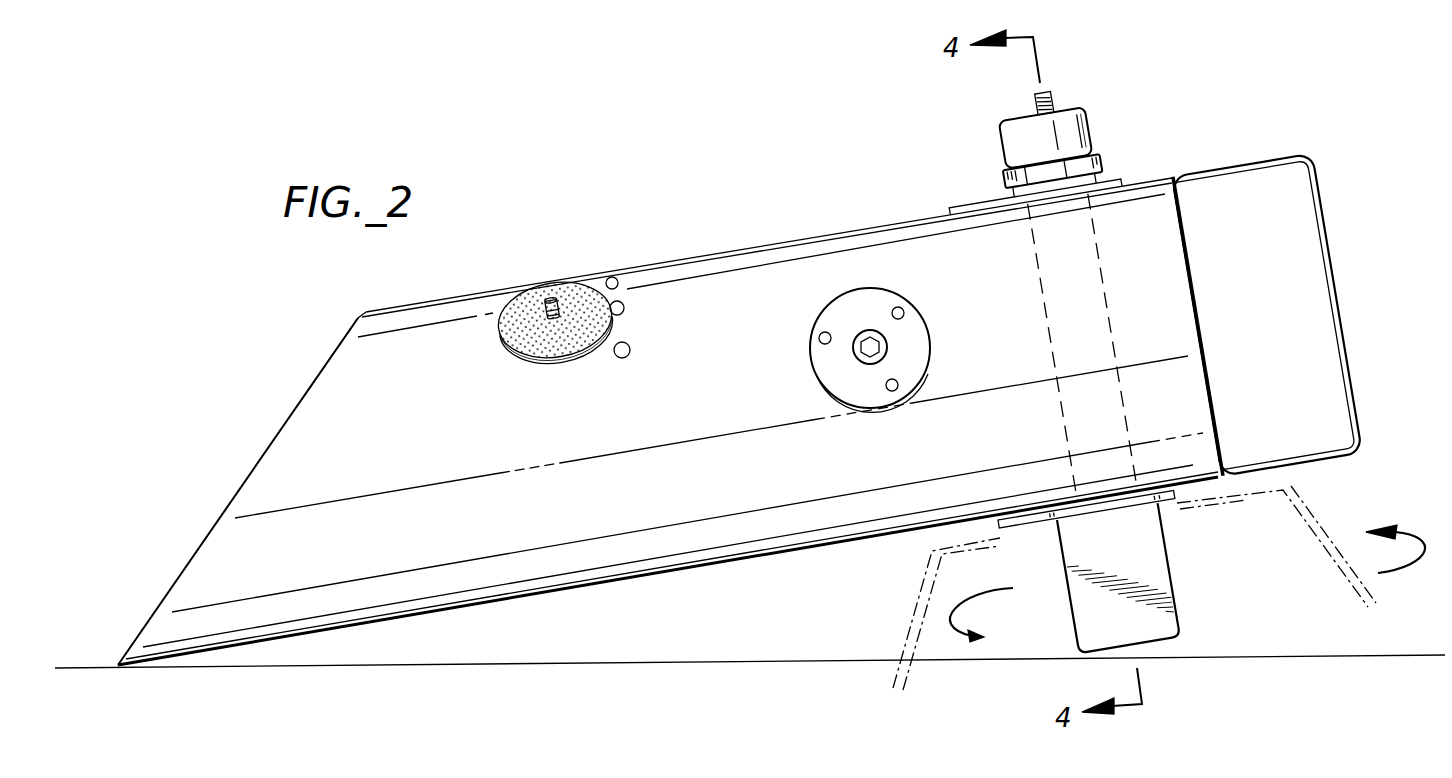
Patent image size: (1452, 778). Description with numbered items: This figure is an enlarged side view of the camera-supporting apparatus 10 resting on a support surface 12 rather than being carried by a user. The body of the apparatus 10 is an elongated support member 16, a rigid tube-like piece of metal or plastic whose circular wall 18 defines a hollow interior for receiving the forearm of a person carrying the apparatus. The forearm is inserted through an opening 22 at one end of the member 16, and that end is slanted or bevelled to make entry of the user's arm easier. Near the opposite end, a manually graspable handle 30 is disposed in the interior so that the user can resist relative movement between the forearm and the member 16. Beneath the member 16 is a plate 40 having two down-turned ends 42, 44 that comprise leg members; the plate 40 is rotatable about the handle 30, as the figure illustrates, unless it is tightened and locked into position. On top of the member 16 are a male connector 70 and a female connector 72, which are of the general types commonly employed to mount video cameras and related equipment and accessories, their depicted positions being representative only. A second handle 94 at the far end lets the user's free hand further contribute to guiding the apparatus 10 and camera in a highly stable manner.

The apparatus 10 is at (734, 254).
The support surface 12 is at (596, 665).
The elongated support member 16 is at (344, 366).
The circular wall 18 is at (680, 277).
The opening 22 is at (273, 440).
The manually graspable handle 30 is at (1093, 230).
The plate 40 is at (1237, 510).
The down-turned end 42 is at (1165, 578).
The down-turned end 44 is at (1313, 510).
The male connector 70 is at (552, 300).
The female connector 72 is at (858, 336).
The second handle 94 is at (1254, 158).